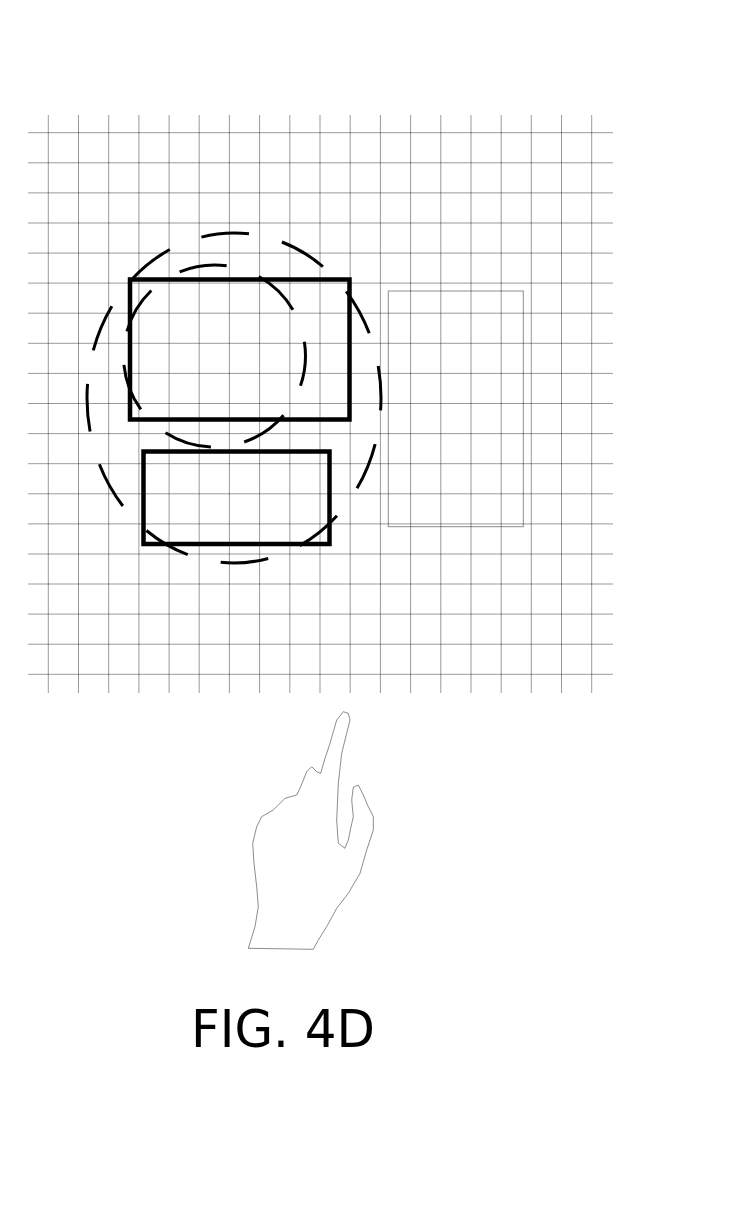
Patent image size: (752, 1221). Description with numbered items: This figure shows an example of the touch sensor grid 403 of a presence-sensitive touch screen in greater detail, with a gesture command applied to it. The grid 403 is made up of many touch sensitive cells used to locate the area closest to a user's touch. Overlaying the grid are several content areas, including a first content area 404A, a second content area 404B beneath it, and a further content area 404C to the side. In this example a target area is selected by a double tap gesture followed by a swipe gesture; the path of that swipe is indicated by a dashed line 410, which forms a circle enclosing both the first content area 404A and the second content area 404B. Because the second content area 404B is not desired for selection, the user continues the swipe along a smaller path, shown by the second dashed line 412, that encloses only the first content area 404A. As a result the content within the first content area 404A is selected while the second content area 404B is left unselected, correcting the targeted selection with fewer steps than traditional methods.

The touch sensor grid 403 is at (335, 125).
The first content area 404A is at (188, 358).
The second content area 404B is at (188, 508).
The third displayed object 404C is at (428, 428).
The dashed line 410 is at (150, 257).
The second dashed line 412 is at (230, 267).